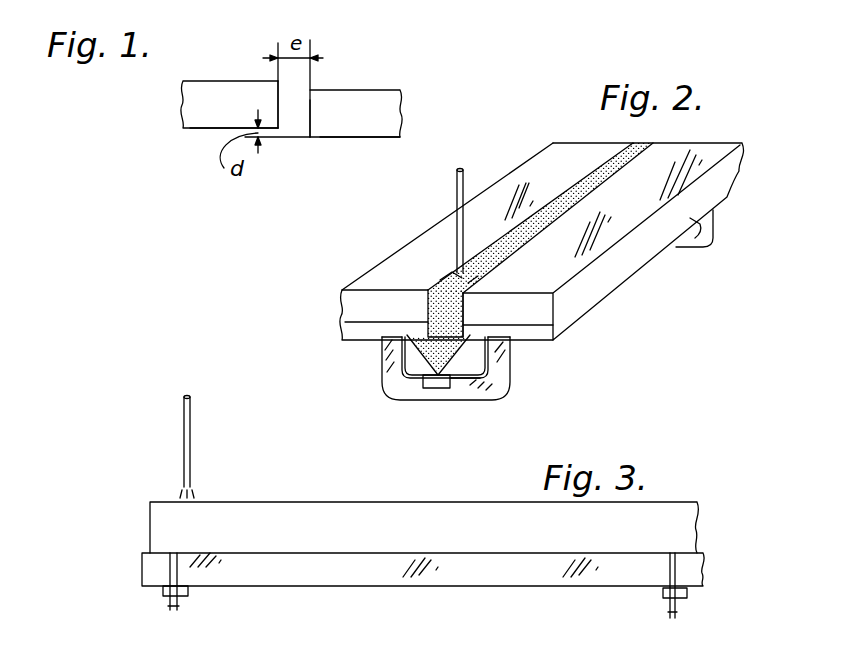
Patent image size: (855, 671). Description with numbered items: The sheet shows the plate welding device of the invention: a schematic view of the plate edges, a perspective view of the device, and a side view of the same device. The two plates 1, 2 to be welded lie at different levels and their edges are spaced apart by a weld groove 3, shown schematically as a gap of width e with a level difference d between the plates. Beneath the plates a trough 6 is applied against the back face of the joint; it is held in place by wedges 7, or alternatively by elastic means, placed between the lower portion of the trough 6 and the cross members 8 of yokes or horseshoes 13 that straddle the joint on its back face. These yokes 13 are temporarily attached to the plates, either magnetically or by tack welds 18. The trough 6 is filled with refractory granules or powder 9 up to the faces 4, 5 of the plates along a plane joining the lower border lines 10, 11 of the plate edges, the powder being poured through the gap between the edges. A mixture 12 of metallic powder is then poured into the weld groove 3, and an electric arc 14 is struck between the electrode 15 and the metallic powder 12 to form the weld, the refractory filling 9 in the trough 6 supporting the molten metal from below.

In FIG. 1, the plate 1 is at (195, 102).
In FIG. 2, the plate 1 is at (340, 298).
In FIG. 1, the plate 2 is at (386, 117).
In FIG. 2, the plate 2 is at (553, 305).
In FIG. 3, the plate 2 is at (420, 506).
In FIG. 1, the weld groove 3 is at (303, 104).
In FIG. 2, the weld groove 3 is at (547, 204).
In FIG. 1, the face of plate 4 is at (210, 129).
In FIG. 2, the face of plate 4 is at (341, 322).
In FIG. 1, the face of plate 5 is at (357, 138).
In FIG. 2, the face of plate 5 is at (535, 346).
In FIG. 2, the trough 6 is at (395, 385).
In FIG. 3, the trough 6 is at (350, 576).
In FIG. 2, the wedge 7 is at (437, 388).
In FIG. 3, the wedge 7 is at (162, 587).
In FIG. 2, the cross member 8 is at (473, 396).
In FIG. 2, the refractory granules or powder 9 is at (440, 389).
In FIG. 1, the lower border line 10 is at (294, 104).
In FIG. 2, the lower border line 10 is at (423, 313).
In FIG. 1, the lower border line 11 is at (310, 140).
In FIG. 2, the lower border line 11 is at (447, 357).
In FIG. 2, the mixture of metallic powder 12 is at (450, 279).
In FIG. 2, the yoke 13 is at (707, 236).
In FIG. 3, the yoke 13 is at (177, 604).
In FIG. 2, the electric arc 14 is at (478, 278).
In FIG. 2, the electrode 15 is at (465, 185).
In FIG. 3, the electrode 15 is at (190, 430).
In FIG. 2, the tack weld 18 is at (383, 343).